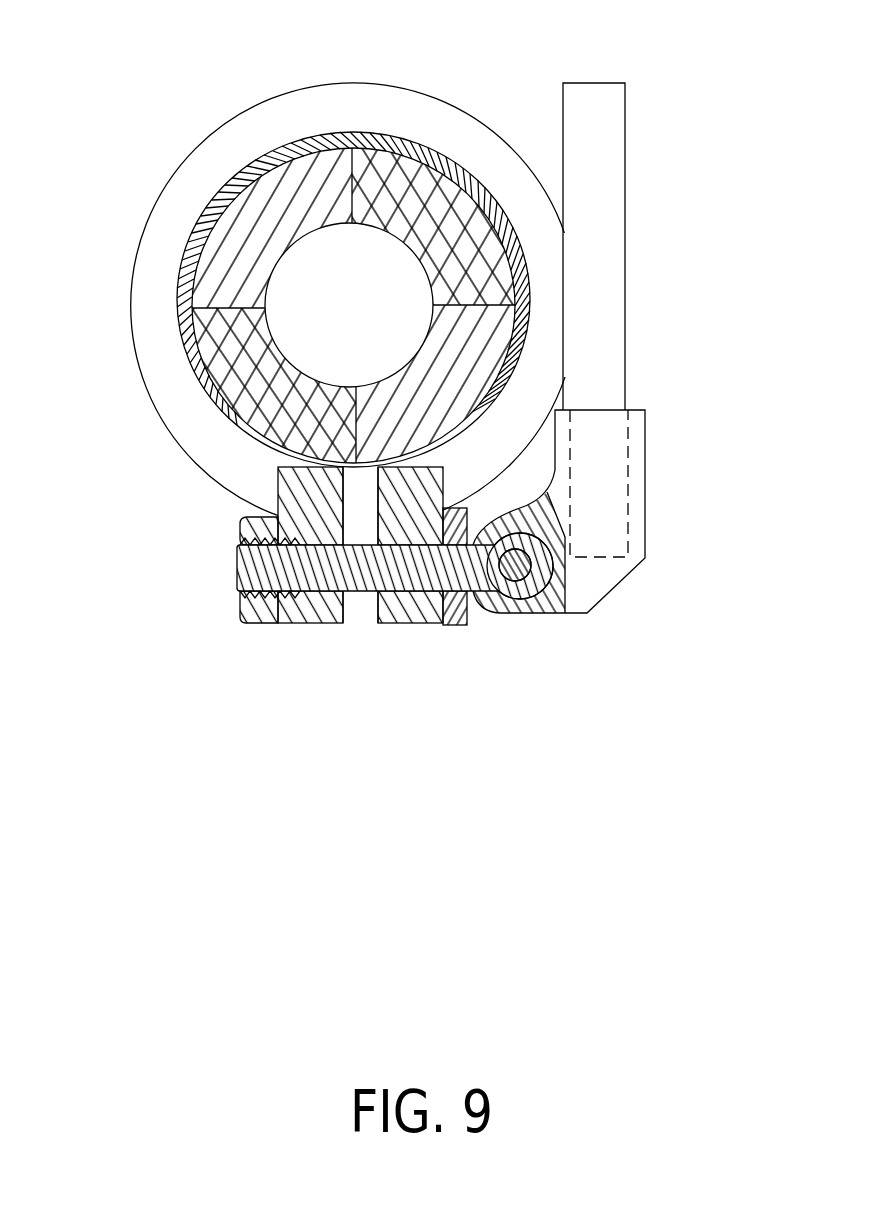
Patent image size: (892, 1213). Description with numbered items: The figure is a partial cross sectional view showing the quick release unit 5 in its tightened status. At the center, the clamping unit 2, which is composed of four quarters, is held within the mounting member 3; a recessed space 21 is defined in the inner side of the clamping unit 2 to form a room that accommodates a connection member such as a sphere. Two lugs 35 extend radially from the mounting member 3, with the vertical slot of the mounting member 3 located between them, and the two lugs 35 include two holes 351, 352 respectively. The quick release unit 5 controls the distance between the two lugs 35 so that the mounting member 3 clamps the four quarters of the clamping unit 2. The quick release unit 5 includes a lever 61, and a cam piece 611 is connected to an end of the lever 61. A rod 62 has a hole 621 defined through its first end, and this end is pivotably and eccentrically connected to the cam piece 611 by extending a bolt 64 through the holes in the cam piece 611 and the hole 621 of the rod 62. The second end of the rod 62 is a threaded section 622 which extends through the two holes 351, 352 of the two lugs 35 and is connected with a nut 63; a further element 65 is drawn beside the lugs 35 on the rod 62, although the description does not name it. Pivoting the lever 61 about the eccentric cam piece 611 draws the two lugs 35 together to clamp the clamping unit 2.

The clamping unit 2 is at (328, 185).
The recessed space 21 is at (317, 267).
The mounting member 3 is at (443, 87).
The lugs 35 is at (320, 625).
The hole 351 is at (358, 607).
The hole 352 is at (290, 623).
The quick release unit 5 is at (728, 737).
The lever 61 is at (607, 223).
The cam piece 611 is at (486, 605).
The rod 62 is at (300, 575).
The hole 621 is at (531, 592).
The threaded section 622 is at (238, 528).
The nut 63 is at (240, 617).
The bolt 64 is at (595, 671).
The washer 65 is at (457, 627).